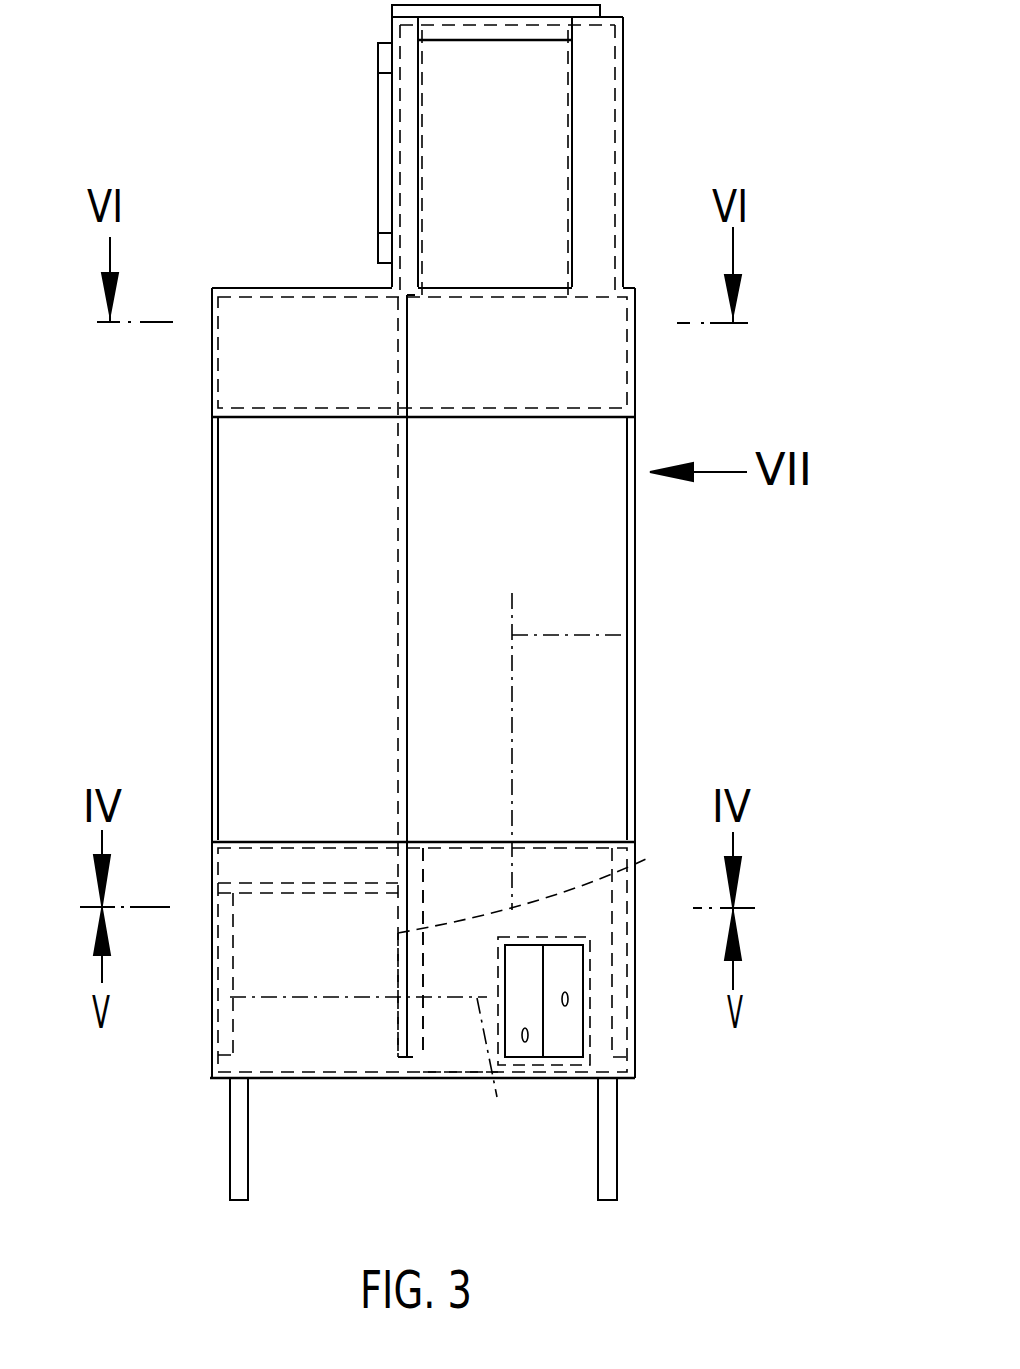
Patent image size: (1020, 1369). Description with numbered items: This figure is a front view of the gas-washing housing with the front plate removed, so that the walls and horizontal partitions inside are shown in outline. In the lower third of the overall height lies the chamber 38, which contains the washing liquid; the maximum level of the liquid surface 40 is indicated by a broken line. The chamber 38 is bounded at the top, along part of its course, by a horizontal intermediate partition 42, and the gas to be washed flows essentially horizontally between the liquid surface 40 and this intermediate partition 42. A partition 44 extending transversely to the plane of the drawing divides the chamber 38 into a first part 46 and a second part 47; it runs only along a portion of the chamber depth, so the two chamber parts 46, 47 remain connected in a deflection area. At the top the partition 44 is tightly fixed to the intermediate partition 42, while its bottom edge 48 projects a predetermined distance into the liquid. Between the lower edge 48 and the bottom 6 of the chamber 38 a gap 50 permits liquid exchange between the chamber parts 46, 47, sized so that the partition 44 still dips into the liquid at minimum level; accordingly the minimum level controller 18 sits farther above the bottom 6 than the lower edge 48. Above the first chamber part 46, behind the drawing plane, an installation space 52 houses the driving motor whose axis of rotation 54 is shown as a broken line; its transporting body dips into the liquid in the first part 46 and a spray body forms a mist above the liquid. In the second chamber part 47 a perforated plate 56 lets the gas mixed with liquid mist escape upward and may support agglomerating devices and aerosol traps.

The bottom 6 is at (280, 1080).
The minimum level controller 18 is at (525, 1040).
The chamber 38 is at (448, 1030).
The surface of the liquid 40 is at (497, 1097).
The intermediate partition 42 is at (562, 840).
The partition 44 is at (660, 855).
The first part 46 is at (597, 997).
The second part 47 is at (277, 963).
The bottom edge 48 is at (398, 1047).
The gap 50 is at (410, 1063).
The installation space 52 is at (560, 538).
The axis of rotation 54 is at (643, 633).
The perforated plate 56 is at (303, 883).